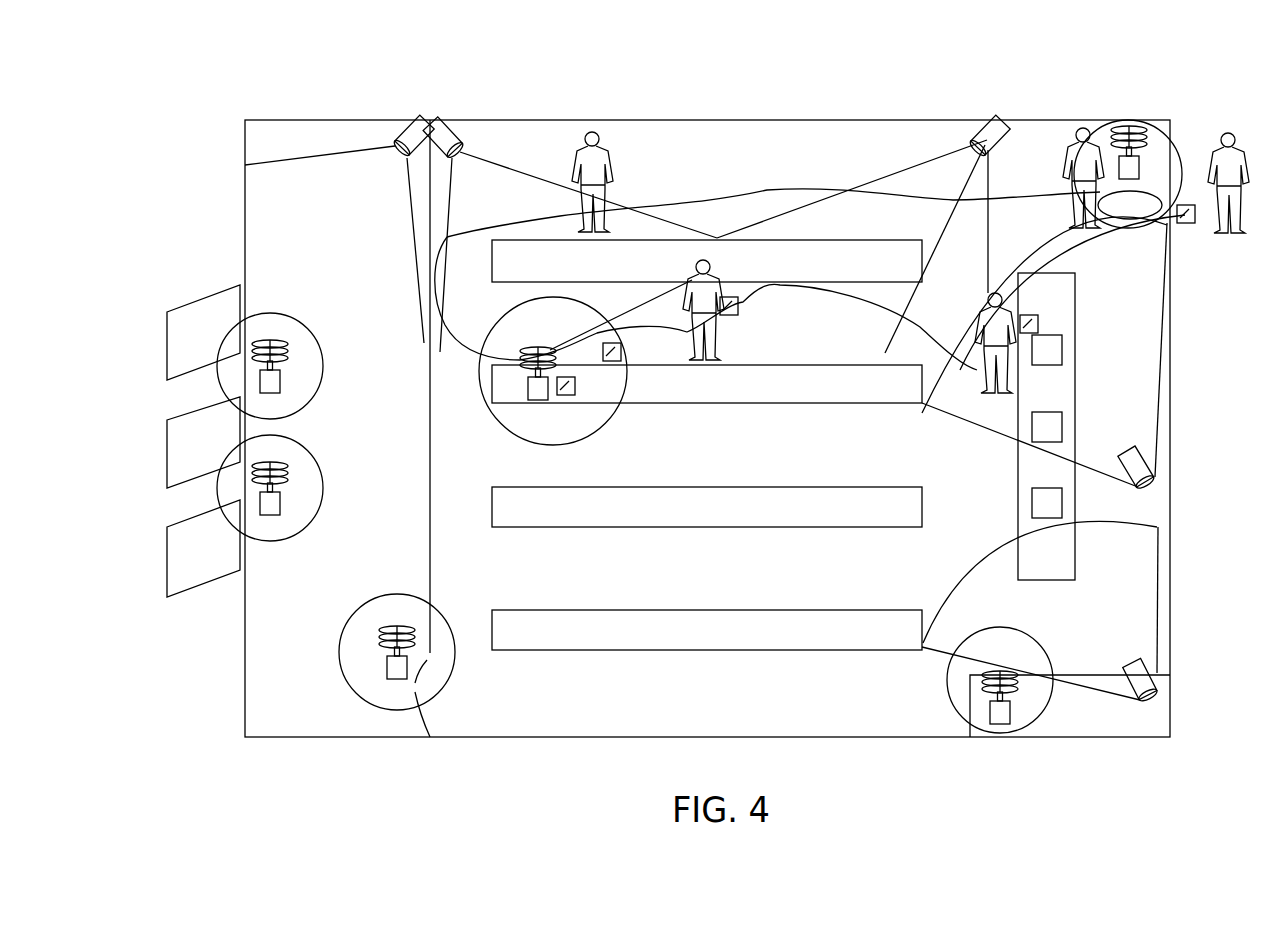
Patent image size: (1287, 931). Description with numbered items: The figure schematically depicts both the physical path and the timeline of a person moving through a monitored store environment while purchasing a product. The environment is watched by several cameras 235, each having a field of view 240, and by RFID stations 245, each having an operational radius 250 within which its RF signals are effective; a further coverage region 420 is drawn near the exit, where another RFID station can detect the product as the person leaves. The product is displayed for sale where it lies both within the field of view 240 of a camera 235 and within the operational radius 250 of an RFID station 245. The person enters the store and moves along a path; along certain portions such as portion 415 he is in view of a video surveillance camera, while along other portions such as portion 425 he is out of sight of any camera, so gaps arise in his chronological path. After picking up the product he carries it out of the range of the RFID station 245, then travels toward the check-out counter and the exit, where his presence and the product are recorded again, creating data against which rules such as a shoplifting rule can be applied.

The camera 235 is at (448, 128).
The field of view 240 is at (540, 178).
The RFID station 245 is at (538, 402).
The operational radius 250 is at (481, 400).
The portion of the path 415 is at (920, 197).
The beacon range 420 is at (1182, 170).
The portion of the path 425 is at (773, 190).